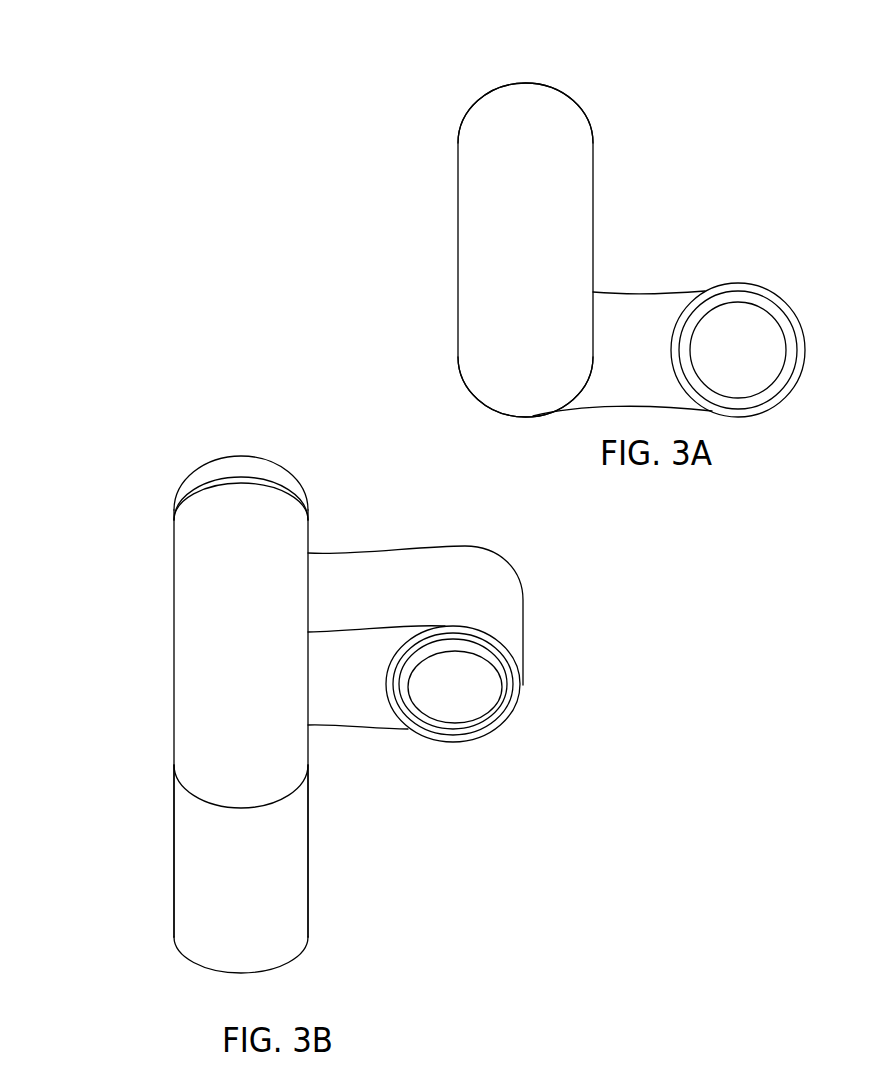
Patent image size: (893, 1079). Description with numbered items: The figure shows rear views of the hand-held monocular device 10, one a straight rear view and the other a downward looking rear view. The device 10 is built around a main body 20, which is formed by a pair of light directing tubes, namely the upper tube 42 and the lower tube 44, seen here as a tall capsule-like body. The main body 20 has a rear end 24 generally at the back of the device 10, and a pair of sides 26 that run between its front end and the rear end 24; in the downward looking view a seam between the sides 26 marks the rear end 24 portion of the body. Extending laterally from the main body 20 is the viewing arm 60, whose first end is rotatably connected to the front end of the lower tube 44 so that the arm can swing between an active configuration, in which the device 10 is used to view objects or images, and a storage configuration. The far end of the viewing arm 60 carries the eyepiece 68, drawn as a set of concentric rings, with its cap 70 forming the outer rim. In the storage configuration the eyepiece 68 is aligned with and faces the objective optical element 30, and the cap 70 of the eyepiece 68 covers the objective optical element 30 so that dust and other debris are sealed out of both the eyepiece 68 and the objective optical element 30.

In FIG. 3A, the hand-held monocular device 10 is at (690, 130).
In FIG. 3B, the hand-held monocular device 10 is at (137, 424).
In FIG. 3B, the main body 20 is at (152, 690).
In FIG. 3B, the rear end 24 is at (241, 851).
In FIG. 3B, the sides 26 is at (173, 750).
In FIG. 3A, the objective optical element 30 is at (750, 378).
In FIG. 3B, the objective optical element 30 is at (470, 710).
In FIG. 3A, the upper tube 42 is at (457, 138).
In FIG. 3B, the upper tube 42 is at (173, 582).
In FIG. 3A, the lower tube 44 is at (458, 365).
In FIG. 3B, the lower tube 44 is at (310, 863).
In FIG. 3A, the viewing arm 60 is at (645, 290).
In FIG. 3B, the viewing arm 60 is at (365, 545).
In FIG. 3A, the eyepiece 68 is at (803, 370).
In FIG. 3B, the eyepiece 68 is at (512, 724).
In FIG. 3A, the cap 70 is at (806, 328).
In FIG. 3B, the cap 70 is at (525, 695).